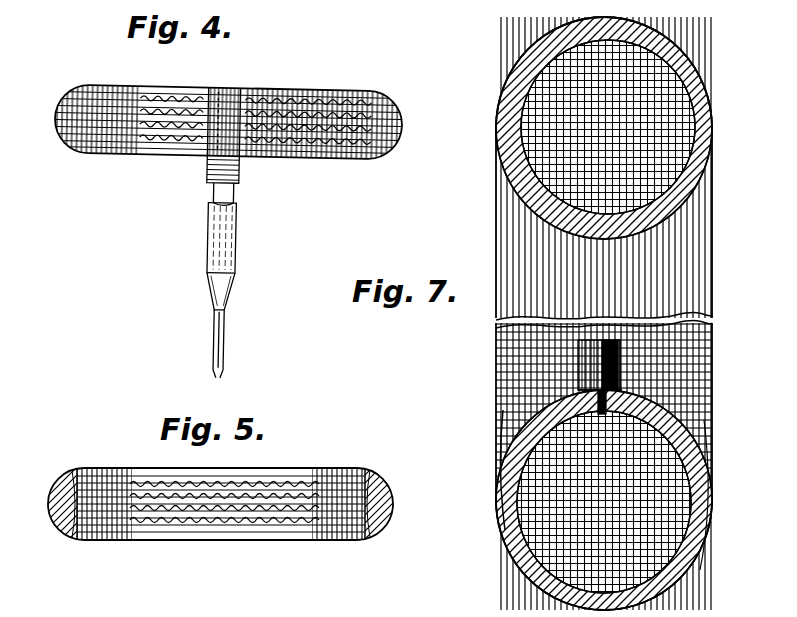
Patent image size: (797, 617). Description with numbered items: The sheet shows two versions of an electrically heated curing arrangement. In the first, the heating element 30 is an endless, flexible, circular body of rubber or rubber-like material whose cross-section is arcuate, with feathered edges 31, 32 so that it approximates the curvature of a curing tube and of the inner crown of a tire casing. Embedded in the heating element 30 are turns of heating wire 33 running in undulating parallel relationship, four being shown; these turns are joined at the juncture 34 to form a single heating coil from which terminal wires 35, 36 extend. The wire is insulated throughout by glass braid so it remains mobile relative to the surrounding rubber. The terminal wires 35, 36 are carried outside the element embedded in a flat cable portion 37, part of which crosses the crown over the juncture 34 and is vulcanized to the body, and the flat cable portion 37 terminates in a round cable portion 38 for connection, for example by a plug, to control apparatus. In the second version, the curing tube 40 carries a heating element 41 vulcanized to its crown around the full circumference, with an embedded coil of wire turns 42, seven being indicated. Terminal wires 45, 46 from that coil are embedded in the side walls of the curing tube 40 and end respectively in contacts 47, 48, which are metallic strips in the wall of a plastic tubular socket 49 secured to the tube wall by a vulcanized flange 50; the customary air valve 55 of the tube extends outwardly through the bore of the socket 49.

In FIG. 4, the heating element 30 is at (322, 92).
In FIG. 5, the heating element 30 is at (302, 470).
In FIG. 5, the feathered edge 31 is at (82, 470).
In FIG. 5, the feathered edge 32 is at (79, 540).
In FIG. 4, the heating wire turns 33 is at (117, 112).
In FIG. 5, the heating wire turns 33 is at (214, 488).
In FIG. 4, the juncture of wire turns 34 is at (226, 122).
In FIG. 4, the terminal wire 35 is at (215, 193).
In FIG. 4, the terminal wire 36 is at (236, 194).
In FIG. 4, the flat cable portion 37 is at (208, 169).
In FIG. 4, the round cable portion 38 is at (218, 330).
In FIG. 7, the curing tube 40 is at (712, 132).
In FIG. 7, the heating element 41 is at (666, 40).
In FIG. 7, the wire turns 42 is at (542, 44).
In FIG. 7, the terminal wire 45 is at (497, 470).
In FIG. 7, the terminal wire 46 is at (712, 490).
In FIG. 7, the contact 47 is at (578, 364).
In FIG. 7, the contact 48 is at (620, 368).
In FIG. 7, the tubular socket 49 is at (621, 354).
In FIG. 7, the flange 50 is at (628, 392).
In FIG. 7, the air valve 55 is at (600, 340).